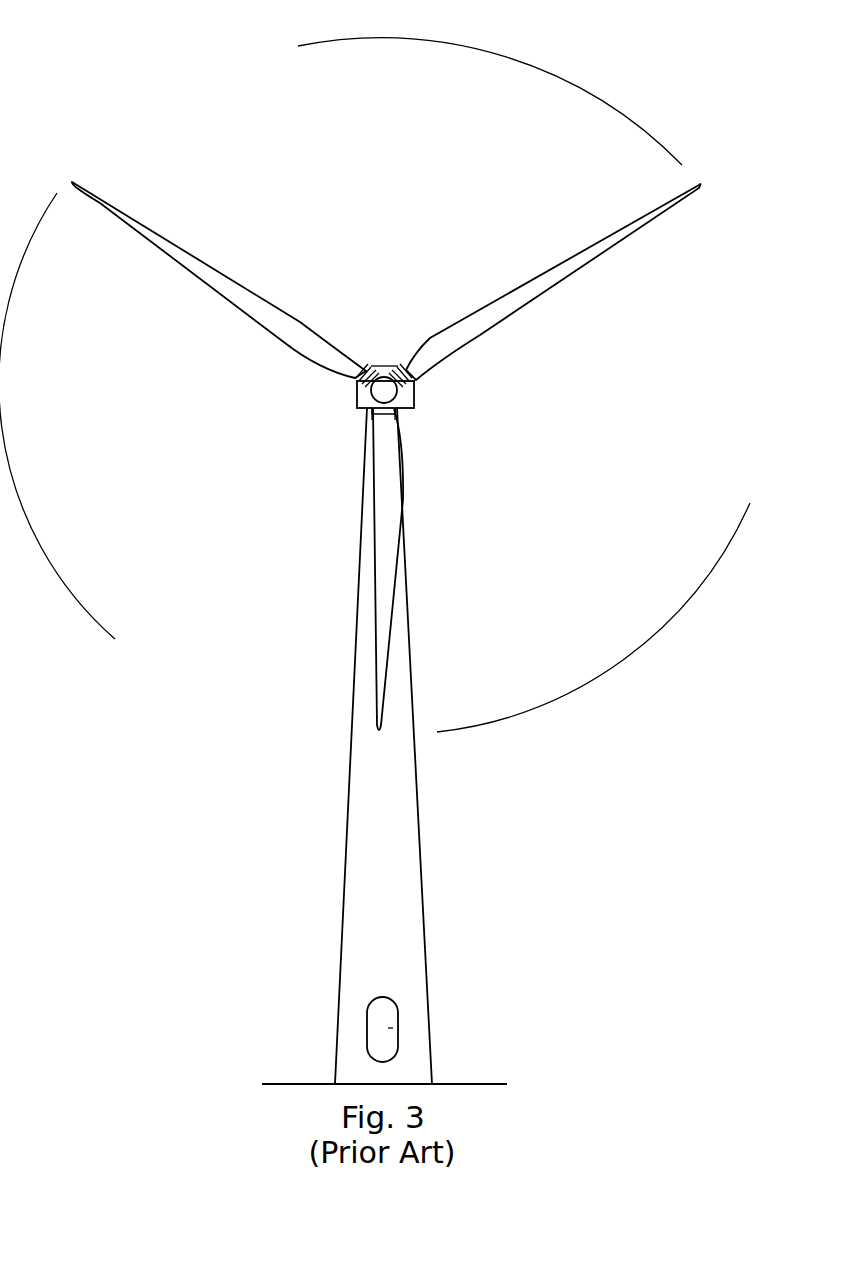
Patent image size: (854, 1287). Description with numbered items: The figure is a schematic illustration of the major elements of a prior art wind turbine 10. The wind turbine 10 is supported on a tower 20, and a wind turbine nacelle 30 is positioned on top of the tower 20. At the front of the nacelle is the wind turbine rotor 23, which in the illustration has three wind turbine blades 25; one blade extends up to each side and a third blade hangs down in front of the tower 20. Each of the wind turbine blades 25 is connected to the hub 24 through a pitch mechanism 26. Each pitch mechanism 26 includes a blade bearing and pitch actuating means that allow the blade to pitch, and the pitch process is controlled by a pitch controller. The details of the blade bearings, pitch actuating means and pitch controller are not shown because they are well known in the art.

The wind turbine 10 is at (375, 561).
The tower 20 is at (396, 878).
The wind turbine rotor 23 is at (386, 456).
The hub 24 is at (383, 383).
The wind turbine blade 25 is at (382, 630).
The pitch mechanism 26 is at (414, 392).
The wind turbine nacelle 30 is at (407, 407).